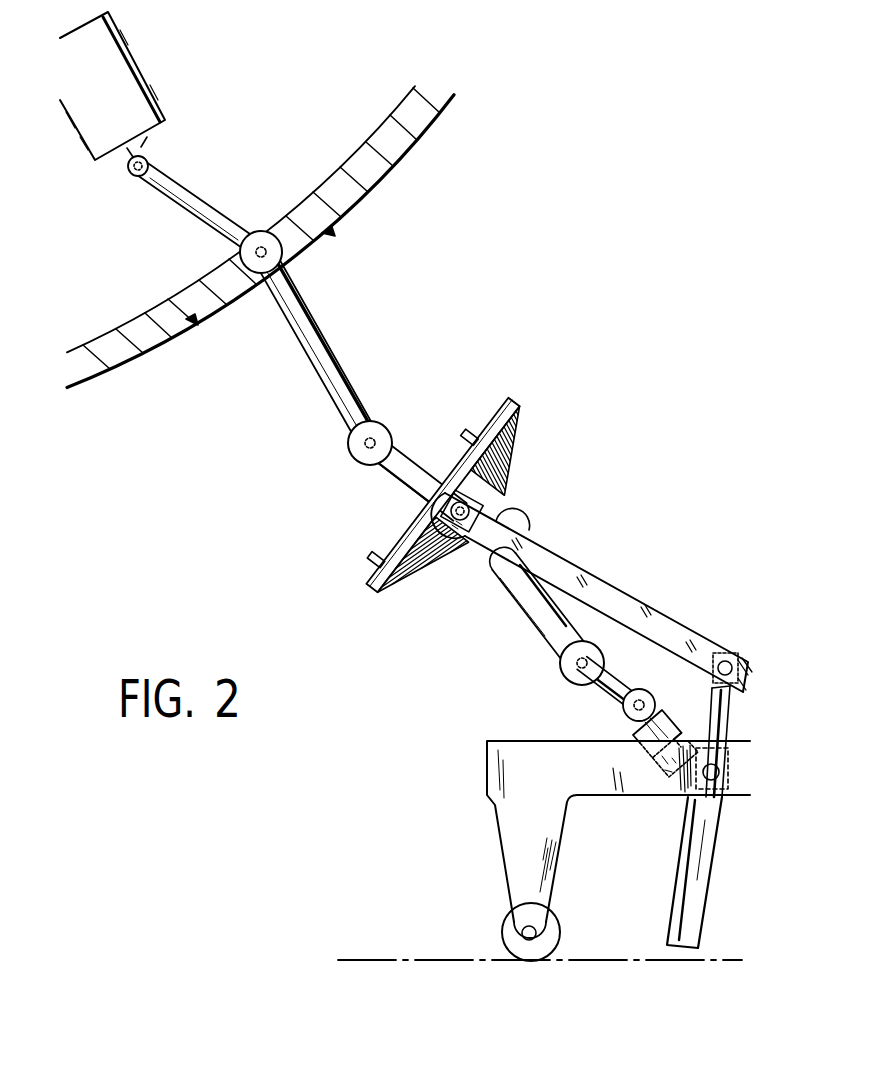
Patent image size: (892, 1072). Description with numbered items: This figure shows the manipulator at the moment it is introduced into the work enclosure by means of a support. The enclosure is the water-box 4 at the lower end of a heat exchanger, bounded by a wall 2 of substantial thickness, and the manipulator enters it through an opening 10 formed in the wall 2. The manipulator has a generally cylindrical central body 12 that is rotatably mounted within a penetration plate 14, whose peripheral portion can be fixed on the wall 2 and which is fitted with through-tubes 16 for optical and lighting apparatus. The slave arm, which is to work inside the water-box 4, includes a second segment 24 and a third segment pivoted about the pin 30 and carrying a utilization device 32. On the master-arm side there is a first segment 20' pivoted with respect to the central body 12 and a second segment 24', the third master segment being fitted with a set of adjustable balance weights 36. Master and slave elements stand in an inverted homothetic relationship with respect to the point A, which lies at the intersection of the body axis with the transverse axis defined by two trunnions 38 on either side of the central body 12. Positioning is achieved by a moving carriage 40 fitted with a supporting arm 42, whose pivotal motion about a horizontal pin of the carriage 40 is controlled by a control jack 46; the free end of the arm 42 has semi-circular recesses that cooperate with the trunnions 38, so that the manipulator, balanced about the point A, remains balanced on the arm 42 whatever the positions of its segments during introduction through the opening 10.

The wall 2 is at (390, 147).
The water-box 4 is at (283, 145).
The opening 10 is at (178, 297).
The central body 12 is at (412, 477).
The penetration plate 14 is at (512, 398).
The through-tubes 16 is at (376, 584).
The first segment of the master arm 20' is at (534, 616).
The second segment of the slave arm 24 is at (192, 207).
The second segment of the master arm 24' is at (588, 694).
The pin 30 is at (318, 348).
The utilization device 32 is at (108, 62).
The adjustable balance weights 36 is at (637, 733).
The trunnions 38 is at (470, 545).
The moving carriage 40 is at (487, 775).
The supporting arm 42 is at (618, 597).
The control jack 46 is at (690, 852).
The point A is at (500, 502).